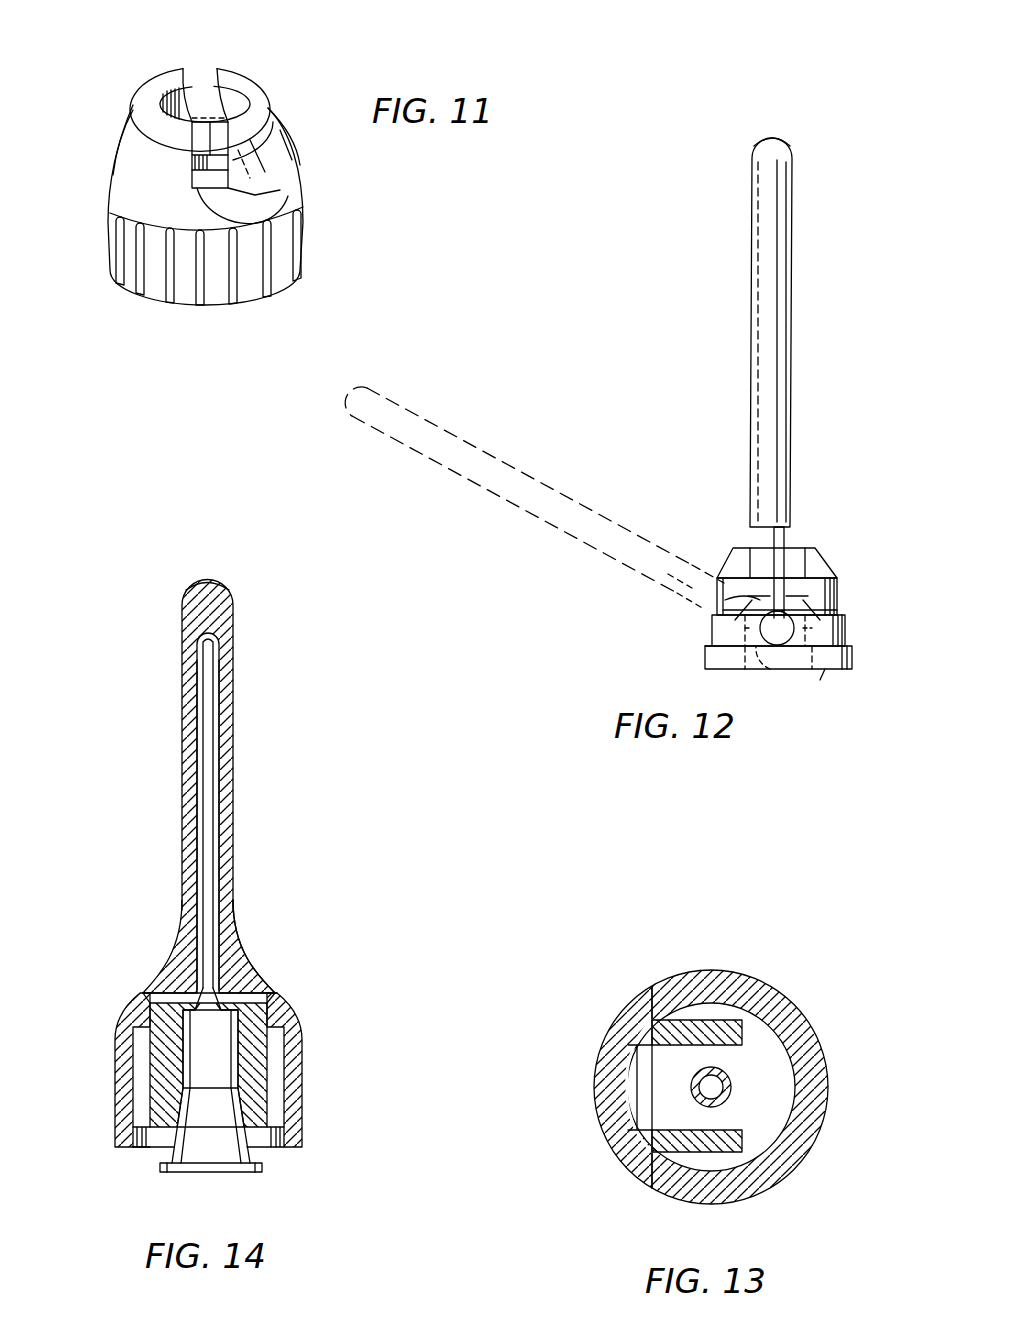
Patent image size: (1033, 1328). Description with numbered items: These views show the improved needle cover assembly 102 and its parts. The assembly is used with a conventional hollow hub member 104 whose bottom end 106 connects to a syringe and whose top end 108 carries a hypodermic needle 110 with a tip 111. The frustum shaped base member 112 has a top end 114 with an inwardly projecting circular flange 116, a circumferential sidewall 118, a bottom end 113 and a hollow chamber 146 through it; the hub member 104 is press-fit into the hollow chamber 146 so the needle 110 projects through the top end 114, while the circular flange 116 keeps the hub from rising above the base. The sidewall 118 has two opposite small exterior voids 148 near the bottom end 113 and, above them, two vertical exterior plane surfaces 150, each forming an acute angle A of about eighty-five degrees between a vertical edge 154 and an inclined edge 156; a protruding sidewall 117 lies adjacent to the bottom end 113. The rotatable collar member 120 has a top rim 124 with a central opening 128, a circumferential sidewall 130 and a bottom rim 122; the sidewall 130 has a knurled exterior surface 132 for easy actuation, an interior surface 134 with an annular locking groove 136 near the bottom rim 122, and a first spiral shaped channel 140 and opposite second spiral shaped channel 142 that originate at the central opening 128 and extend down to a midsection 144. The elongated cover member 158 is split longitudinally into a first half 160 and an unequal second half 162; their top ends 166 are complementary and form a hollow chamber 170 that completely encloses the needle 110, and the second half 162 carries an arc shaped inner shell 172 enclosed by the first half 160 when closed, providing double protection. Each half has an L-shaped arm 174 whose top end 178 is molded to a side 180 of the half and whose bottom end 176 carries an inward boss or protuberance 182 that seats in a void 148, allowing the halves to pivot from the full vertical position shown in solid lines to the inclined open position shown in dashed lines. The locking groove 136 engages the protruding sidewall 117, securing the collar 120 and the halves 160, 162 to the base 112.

In FIG. 14, the needle cover assembly 102 is at (262, 706).
In FIG. 14, the hollow hub member 104 is at (208, 1175).
In FIG. 14, the bottom end 106 is at (178, 1172).
In FIG. 14, the top end 108 is at (176, 950).
In FIG. 14, the hypodermic needle 110 is at (214, 774).
In FIG. 13, the hypodermic needle 110 is at (698, 1080).
In FIG. 14, the tip 111 is at (215, 638).
In FIG. 12, the frustum shaped base member 112 is at (838, 663).
In FIG. 12, the bottom end 113 is at (714, 668).
In FIG. 12, the top end 114 is at (805, 549).
In FIG. 14, the circular flange 116 is at (274, 986).
In FIG. 12, the protruding sidewall 117 is at (848, 656).
In FIG. 12, the circumferential sidewall 118 is at (733, 560).
In FIG. 11, the rotatable collar member 120 is at (293, 67).
In FIG. 11, the bottom rim 122 is at (205, 306).
In FIG. 14, the bottom rim 122 is at (120, 1150).
In FIG. 11, the top rim 124 is at (181, 86).
In FIG. 11, the central opening 128 is at (230, 71).
In FIG. 11, the circumferential sidewall 130 is at (272, 133).
In FIG. 11, the knurled exterior surface 132 is at (176, 303).
In FIG. 11, the interior surface 134 is at (212, 133).
In FIG. 11, the annular locking groove 136 is at (200, 165).
In FIG. 14, the annular locking groove 136 is at (296, 1138).
In FIG. 11, the first spiral shaped channel 140 is at (248, 208).
In FIG. 11, the second spiral shaped channel 142 is at (206, 78).
In FIG. 11, the midsection 144 is at (123, 182).
In FIG. 12, the hollow chamber 146 is at (824, 680).
In FIG. 14, the hollow chamber 146 is at (148, 1135).
In FIG. 14, the small exterior voids 148 is at (150, 1105).
In FIG. 12, the vertical exterior plane surfaces 150 is at (757, 588).
In FIG. 14, the vertical exterior plane surfaces 150 is at (137, 1006).
In FIG. 12, the vertical edge 154 is at (792, 590).
In FIG. 12, the inclined edge 156 is at (758, 669).
In FIG. 14, the elongated cover member 158 is at (220, 592).
In FIG. 13, the elongated cover member 158 is at (766, 978).
In FIG. 12, the first half 160 is at (790, 171).
In FIG. 14, the first half 160 is at (187, 751).
In FIG. 13, the first half 160 is at (801, 1036).
In FIG. 13, the second half 162 is at (634, 1148).
In FIG. 12, the top end 166 is at (772, 140).
In FIG. 14, the hollow chamber 170 is at (196, 688).
In FIG. 13, the hollow chamber 170 is at (779, 1073).
In FIG. 13, the arc shaped inner shell 172 is at (727, 1155).
In FIG. 12, the L-shaped arm 174 is at (786, 536).
In FIG. 14, the L-shaped arm 174 is at (160, 979).
In FIG. 12, the bottom end 176 is at (796, 606).
In FIG. 14, the bottom end 176 is at (148, 1055).
In FIG. 12, the top end 178 is at (783, 514).
In FIG. 14, the top end 178 is at (181, 906).
In FIG. 12, the side 180 is at (762, 225).
In FIG. 12, the boss or protuberance 182 is at (790, 630).
In FIG. 14, the boss or protuberance 182 is at (145, 1080).
In FIG. 12, the acute angle A is at (737, 604).